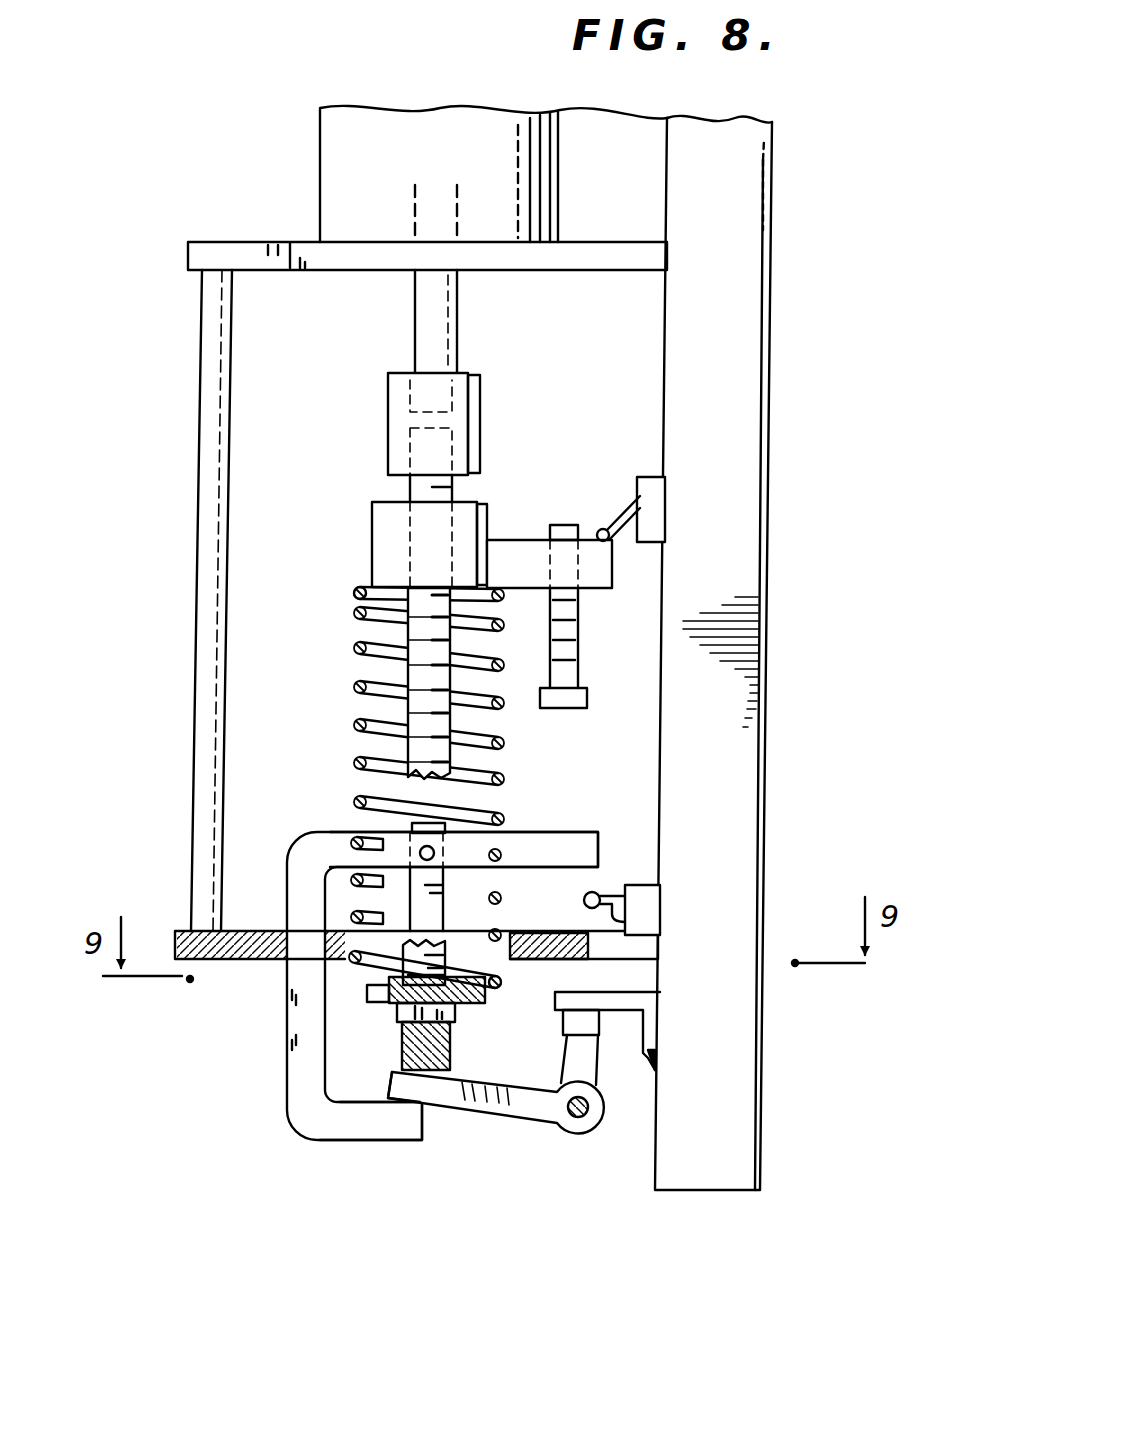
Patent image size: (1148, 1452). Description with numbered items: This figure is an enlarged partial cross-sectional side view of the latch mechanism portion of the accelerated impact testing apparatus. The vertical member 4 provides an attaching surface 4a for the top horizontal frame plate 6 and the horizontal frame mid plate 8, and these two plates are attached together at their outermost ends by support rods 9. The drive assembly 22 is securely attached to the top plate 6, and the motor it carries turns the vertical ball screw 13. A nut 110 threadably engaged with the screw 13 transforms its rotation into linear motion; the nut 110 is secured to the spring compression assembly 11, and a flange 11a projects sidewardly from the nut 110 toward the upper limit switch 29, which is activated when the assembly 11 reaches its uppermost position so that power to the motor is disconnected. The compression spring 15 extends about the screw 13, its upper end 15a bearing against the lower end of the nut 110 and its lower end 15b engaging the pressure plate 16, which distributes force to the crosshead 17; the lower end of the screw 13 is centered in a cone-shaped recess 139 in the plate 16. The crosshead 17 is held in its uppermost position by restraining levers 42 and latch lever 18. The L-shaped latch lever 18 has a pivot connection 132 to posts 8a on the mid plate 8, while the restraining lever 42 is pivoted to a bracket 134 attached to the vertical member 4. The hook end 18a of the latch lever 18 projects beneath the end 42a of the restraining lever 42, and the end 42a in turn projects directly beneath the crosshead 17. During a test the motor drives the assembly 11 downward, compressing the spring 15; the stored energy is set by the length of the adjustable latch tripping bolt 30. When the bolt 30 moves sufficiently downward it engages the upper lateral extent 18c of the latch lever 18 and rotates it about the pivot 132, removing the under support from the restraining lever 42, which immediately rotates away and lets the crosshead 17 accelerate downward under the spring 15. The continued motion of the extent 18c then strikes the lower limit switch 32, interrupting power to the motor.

The vertical member 4 is at (737, 548).
The attaching surface 4a is at (652, 352).
The top horizontal frame plate 6 is at (527, 262).
The horizontal frame mid plate 8 is at (183, 930).
The posts 8a is at (447, 885).
The support rods 9 is at (198, 452).
The spring compression assembly 11 is at (500, 504).
The flange 11a is at (612, 574).
The vertical ball screw 13 is at (455, 717).
The compression spring 15 is at (343, 687).
The upper end of spring 15a is at (356, 593).
The lower end of spring 15b is at (500, 980).
The pressure plate 16 is at (470, 992).
The crosshead 17 is at (400, 1043).
The latch lever 18 is at (272, 1108).
The hook ends 18a is at (385, 1128).
The upper lateral extent 18c is at (600, 848).
The drive assembly 22 is at (335, 156).
The upper limit switch 29 is at (650, 497).
The adjustable latch tripping bolt 30 is at (582, 668).
The lower limit switch 32 is at (655, 920).
The restraining lever 42 is at (617, 1137).
The ends of restraining levers 42a is at (435, 1105).
The nut 110 is at (385, 520).
The pivot connection 132 is at (590, 1107).
The brackets 134 is at (598, 1053).
The cone-shaped recess 139 is at (390, 987).